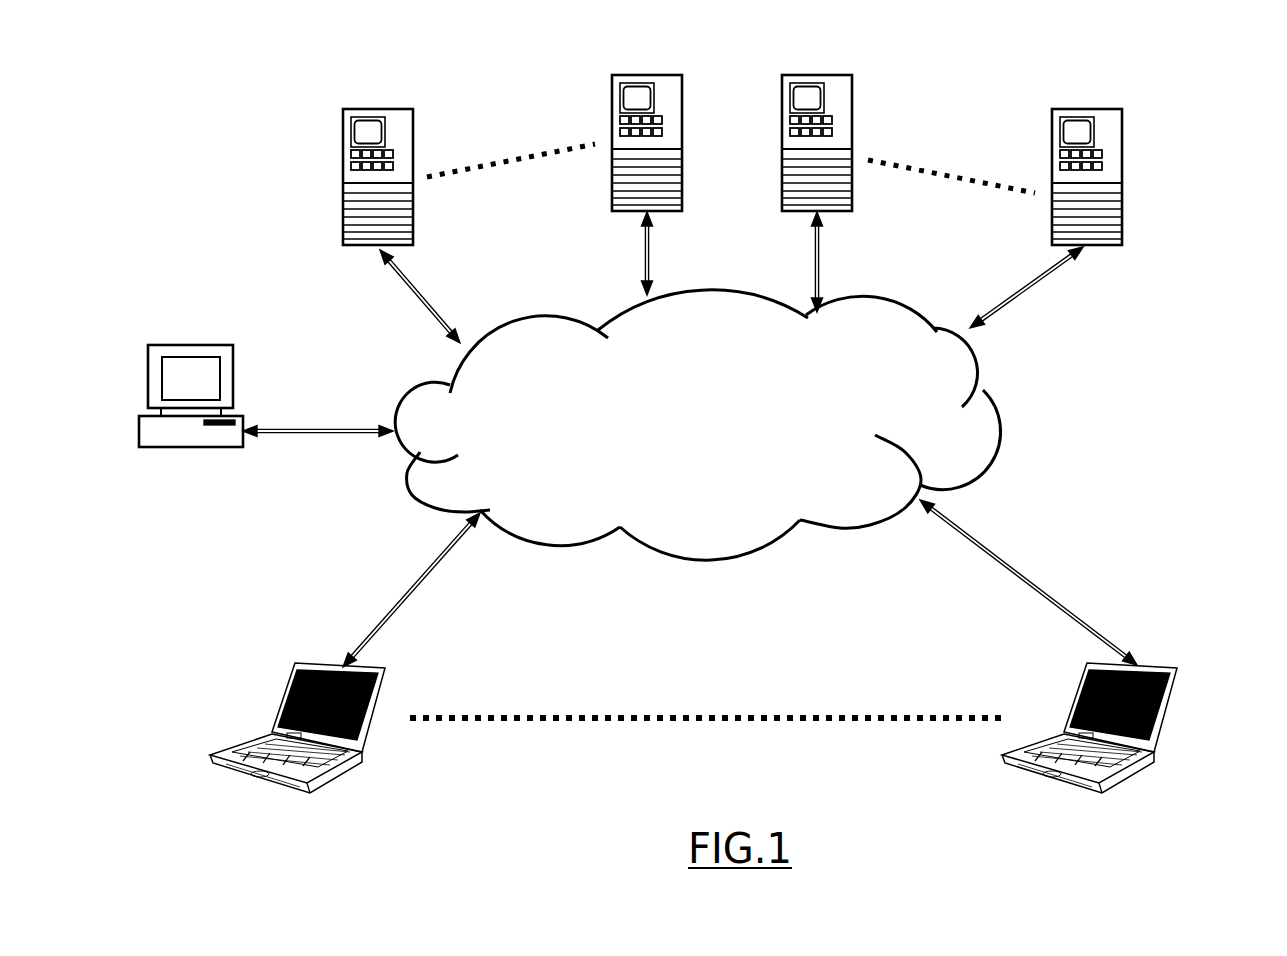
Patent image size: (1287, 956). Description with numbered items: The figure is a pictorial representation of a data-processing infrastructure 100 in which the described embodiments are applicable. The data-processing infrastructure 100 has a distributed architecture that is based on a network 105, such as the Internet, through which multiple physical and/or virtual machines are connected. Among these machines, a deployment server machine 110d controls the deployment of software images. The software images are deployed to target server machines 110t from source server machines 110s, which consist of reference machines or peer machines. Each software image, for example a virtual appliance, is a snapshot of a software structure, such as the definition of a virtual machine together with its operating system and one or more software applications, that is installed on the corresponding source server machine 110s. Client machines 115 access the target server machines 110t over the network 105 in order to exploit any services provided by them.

The data-processing infrastructure 100 is at (713, 431).
The network 105 is at (757, 425).
The source server machine 110s is at (563, 137).
The target server machine 110t is at (1001, 137).
The deployment server machine 110d is at (233, 372).
The client machine 115 is at (724, 748).